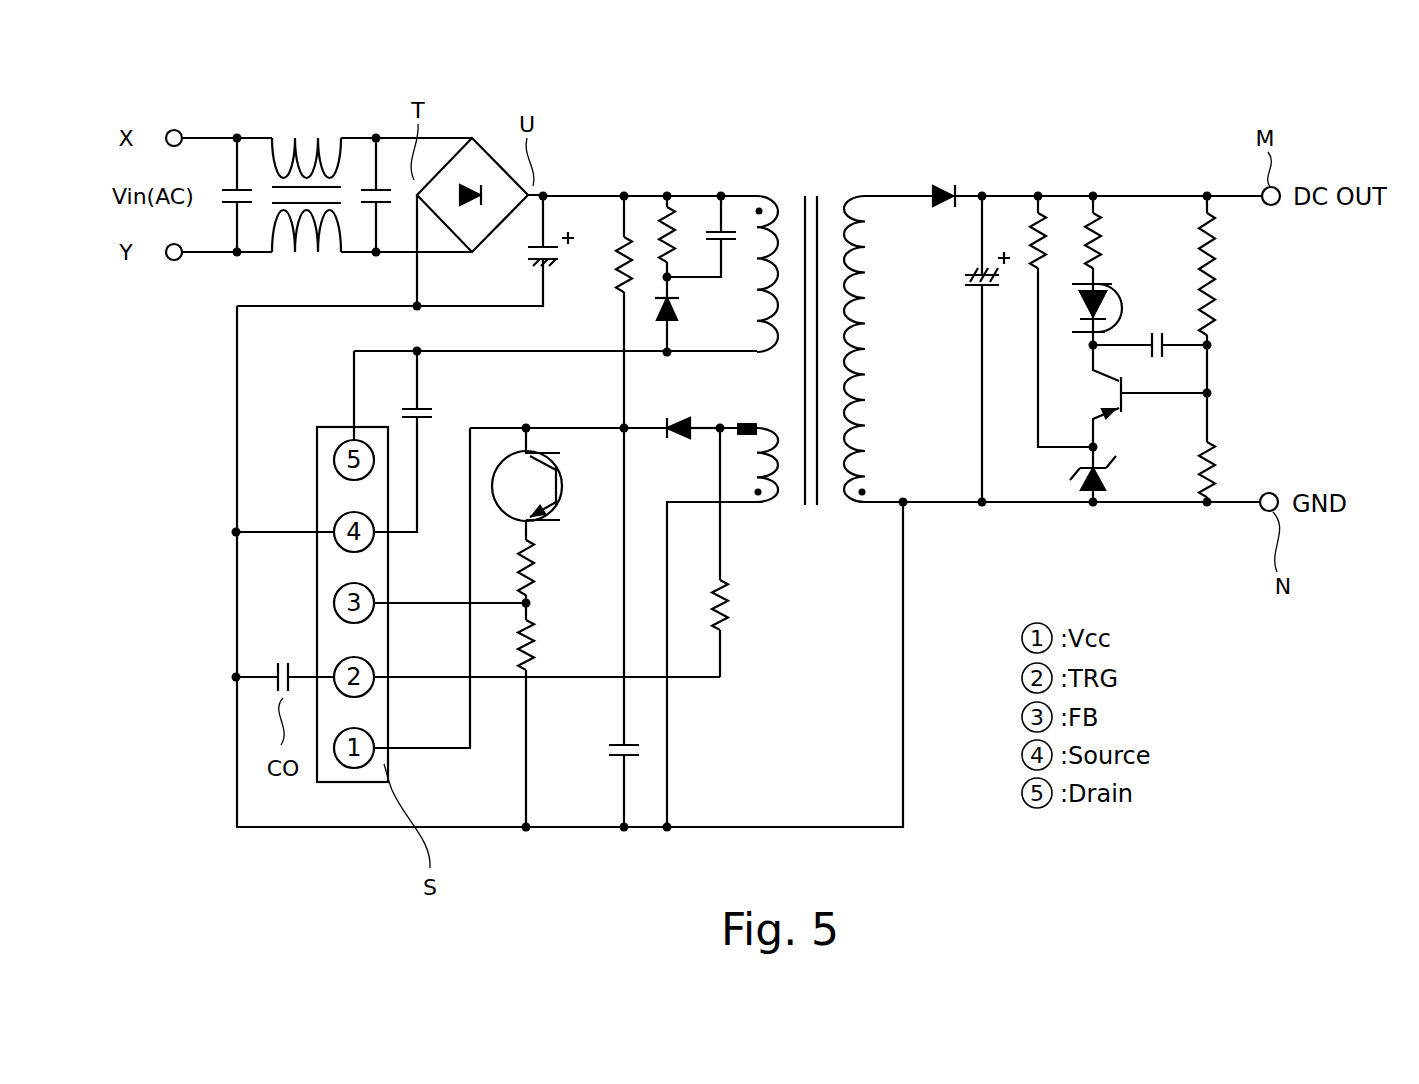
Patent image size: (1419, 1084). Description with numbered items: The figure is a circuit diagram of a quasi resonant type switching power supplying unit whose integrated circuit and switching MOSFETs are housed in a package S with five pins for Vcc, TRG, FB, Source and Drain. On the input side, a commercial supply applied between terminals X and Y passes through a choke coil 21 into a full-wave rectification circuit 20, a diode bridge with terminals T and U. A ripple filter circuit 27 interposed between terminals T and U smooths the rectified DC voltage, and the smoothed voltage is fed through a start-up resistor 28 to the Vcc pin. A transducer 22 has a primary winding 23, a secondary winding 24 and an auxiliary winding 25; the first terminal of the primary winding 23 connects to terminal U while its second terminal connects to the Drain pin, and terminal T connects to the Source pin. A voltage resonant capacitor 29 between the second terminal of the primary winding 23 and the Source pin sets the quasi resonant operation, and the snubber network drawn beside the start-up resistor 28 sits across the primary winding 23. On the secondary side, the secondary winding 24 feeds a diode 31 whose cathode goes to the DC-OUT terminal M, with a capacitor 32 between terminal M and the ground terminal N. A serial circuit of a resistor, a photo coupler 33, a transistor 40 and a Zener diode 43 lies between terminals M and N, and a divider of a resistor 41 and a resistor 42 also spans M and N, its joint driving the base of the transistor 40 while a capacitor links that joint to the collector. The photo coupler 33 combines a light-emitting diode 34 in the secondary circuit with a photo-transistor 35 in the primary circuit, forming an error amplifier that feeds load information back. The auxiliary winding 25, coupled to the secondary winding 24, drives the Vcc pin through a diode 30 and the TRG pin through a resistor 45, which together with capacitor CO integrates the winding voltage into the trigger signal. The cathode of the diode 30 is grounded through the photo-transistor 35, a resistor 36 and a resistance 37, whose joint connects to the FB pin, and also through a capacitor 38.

The full-wave rectification circuit 20 is at (482, 172).
The choke coil 21 is at (305, 160).
The transducer 22 is at (814, 192).
The primary winding 23 is at (752, 237).
The secondary winding 24 is at (858, 362).
The auxiliary winding 25 is at (773, 495).
The ripple filter circuit 27 is at (577, 235).
The start-up resistor 28 is at (632, 248).
The voltage resonant capacitor 29 is at (420, 402).
The diode 30 is at (690, 440).
The diode 31 is at (946, 190).
The capacitor 32 is at (978, 280).
The photo coupler 33 is at (1117, 293).
The light-emitting diode 34 is at (1086, 300).
The photo-transistor 35 is at (560, 478).
The resistor 36 is at (522, 576).
The resistance 37 is at (522, 656).
The capacitor 38 is at (612, 745).
The transistor 40 is at (1115, 418).
The resistor 41 is at (1213, 272).
The resistor 42 is at (1213, 456).
The Zener diode 43 is at (1085, 492).
The resistor 45 is at (727, 617).